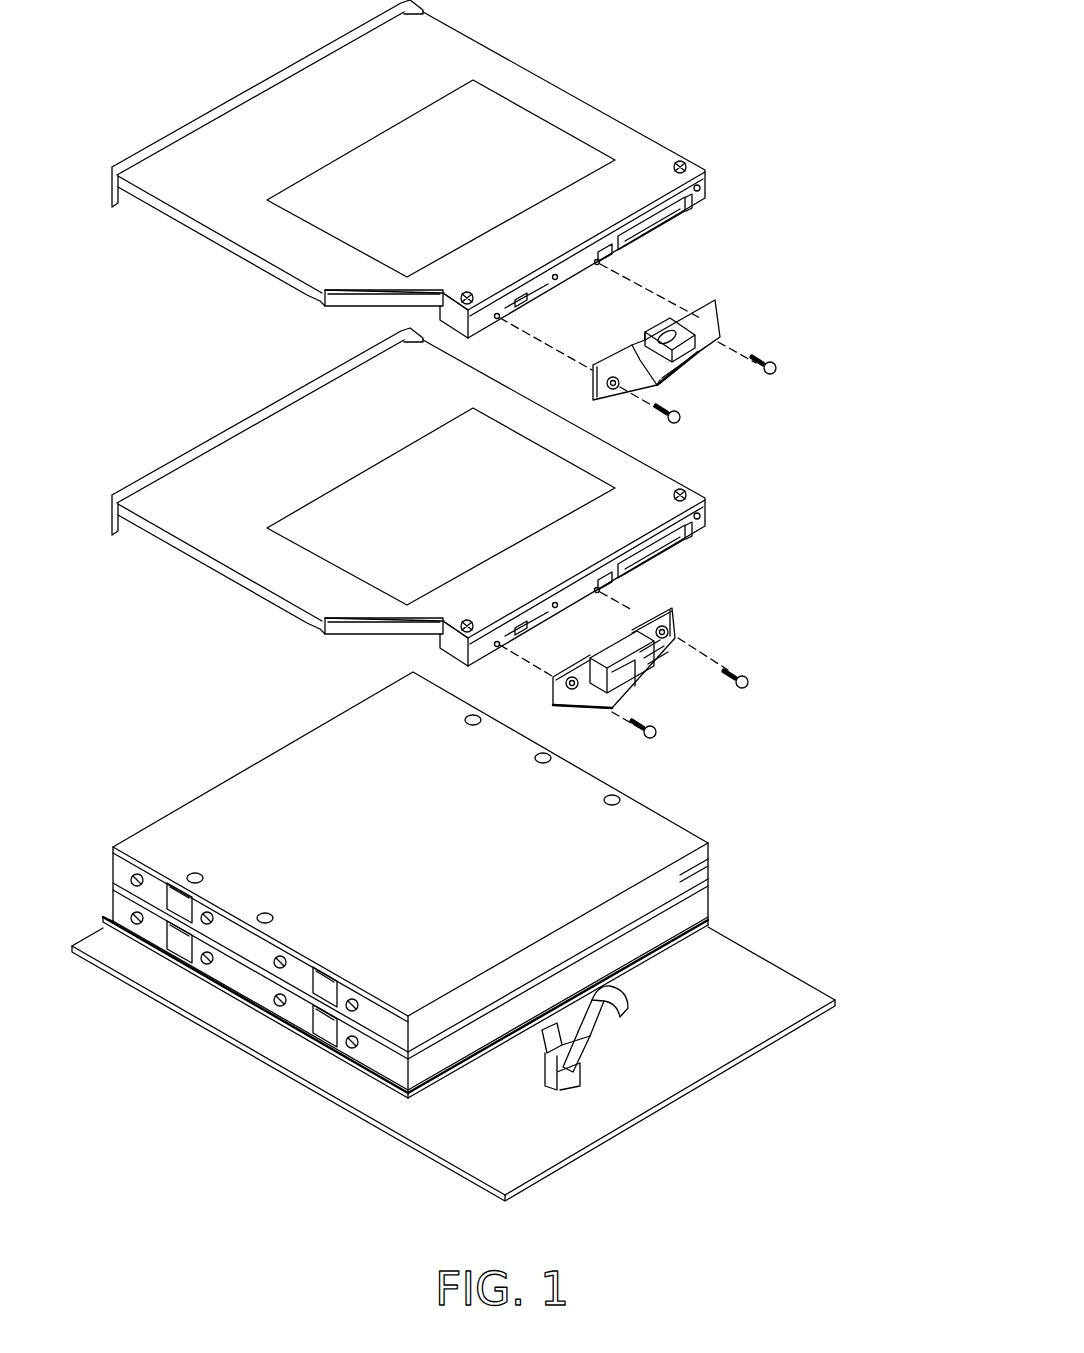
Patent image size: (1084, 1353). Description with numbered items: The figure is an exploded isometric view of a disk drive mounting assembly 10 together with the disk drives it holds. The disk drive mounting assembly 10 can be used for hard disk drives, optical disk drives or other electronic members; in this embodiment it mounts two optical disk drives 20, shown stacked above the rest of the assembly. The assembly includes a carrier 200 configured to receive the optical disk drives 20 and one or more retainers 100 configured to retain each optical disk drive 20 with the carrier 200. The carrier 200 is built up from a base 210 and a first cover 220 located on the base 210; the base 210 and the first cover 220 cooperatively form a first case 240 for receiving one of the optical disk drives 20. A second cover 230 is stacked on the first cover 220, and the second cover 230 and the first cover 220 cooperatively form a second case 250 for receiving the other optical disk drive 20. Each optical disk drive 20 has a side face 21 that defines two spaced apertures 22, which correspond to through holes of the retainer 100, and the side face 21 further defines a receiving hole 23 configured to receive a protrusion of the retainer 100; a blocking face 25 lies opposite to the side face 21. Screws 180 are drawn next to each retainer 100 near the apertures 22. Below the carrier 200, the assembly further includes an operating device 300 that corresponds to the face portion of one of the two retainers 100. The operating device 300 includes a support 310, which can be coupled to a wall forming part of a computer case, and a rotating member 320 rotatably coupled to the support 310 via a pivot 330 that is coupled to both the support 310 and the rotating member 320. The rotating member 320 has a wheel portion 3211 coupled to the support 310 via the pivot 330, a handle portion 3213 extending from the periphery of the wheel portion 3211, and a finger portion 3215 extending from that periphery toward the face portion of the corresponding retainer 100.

The disk drive mounting assembly 10 is at (845, 776).
The optical disk drive 20 is at (401, 338).
The side face 21 is at (643, 240).
The apertures 22 is at (600, 263).
The receiving hole 23 is at (557, 279).
The blocking face 25 is at (145, 152).
The retainer 100 is at (708, 313).
The screw 180 is at (775, 372).
The carrier 200 is at (484, 938).
The base 210 is at (665, 952).
The first cover 220 is at (700, 900).
The second cover 230 is at (700, 860).
The first case 240 is at (443, 1055).
The second case 250 is at (426, 1017).
The operating device 300 is at (734, 1125).
The support 310 is at (552, 1088).
The rotating member 320 is at (708, 1095).
The wheel portion 3211 is at (558, 1076).
The handle portion 3213 is at (594, 1016).
The finger portion 3215 is at (572, 1058).
The pivot 330 is at (555, 1094).